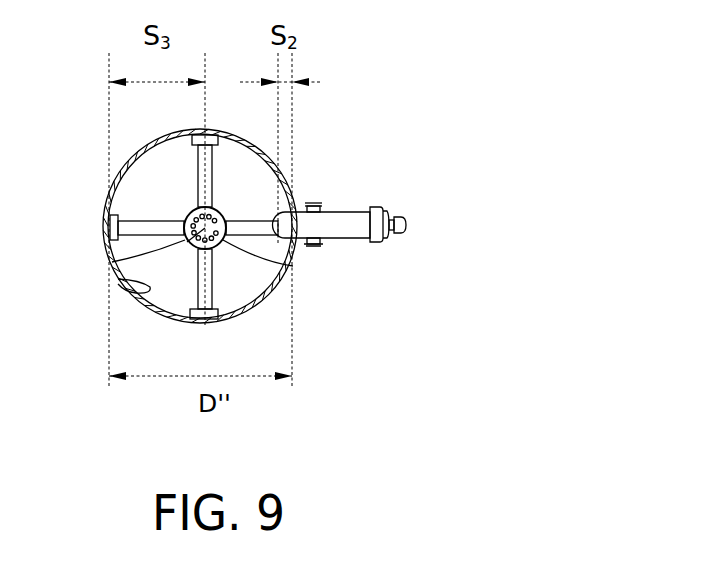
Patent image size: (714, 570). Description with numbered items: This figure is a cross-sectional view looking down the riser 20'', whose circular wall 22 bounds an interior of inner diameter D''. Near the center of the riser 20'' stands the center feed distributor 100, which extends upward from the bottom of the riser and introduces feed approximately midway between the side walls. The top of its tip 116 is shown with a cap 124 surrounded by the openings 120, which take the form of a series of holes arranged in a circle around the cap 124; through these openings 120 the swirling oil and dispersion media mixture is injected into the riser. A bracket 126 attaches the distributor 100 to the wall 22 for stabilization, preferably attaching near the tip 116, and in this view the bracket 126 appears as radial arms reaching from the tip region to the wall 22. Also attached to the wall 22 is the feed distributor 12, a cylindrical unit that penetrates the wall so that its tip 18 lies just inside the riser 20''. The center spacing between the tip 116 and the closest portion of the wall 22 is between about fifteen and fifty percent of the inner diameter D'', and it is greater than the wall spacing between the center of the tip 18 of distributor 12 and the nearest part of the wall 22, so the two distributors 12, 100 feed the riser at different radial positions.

The feed distributor 12 is at (350, 212).
The tip 18 is at (284, 208).
The riser 20'' is at (231, 226).
The wall 22 is at (118, 279).
The center feed distributor 100 is at (112, 262).
The tip 116 is at (293, 266).
The openings 120 is at (207, 226).
The cap 124 is at (190, 240).
The bracket 126 is at (214, 280).